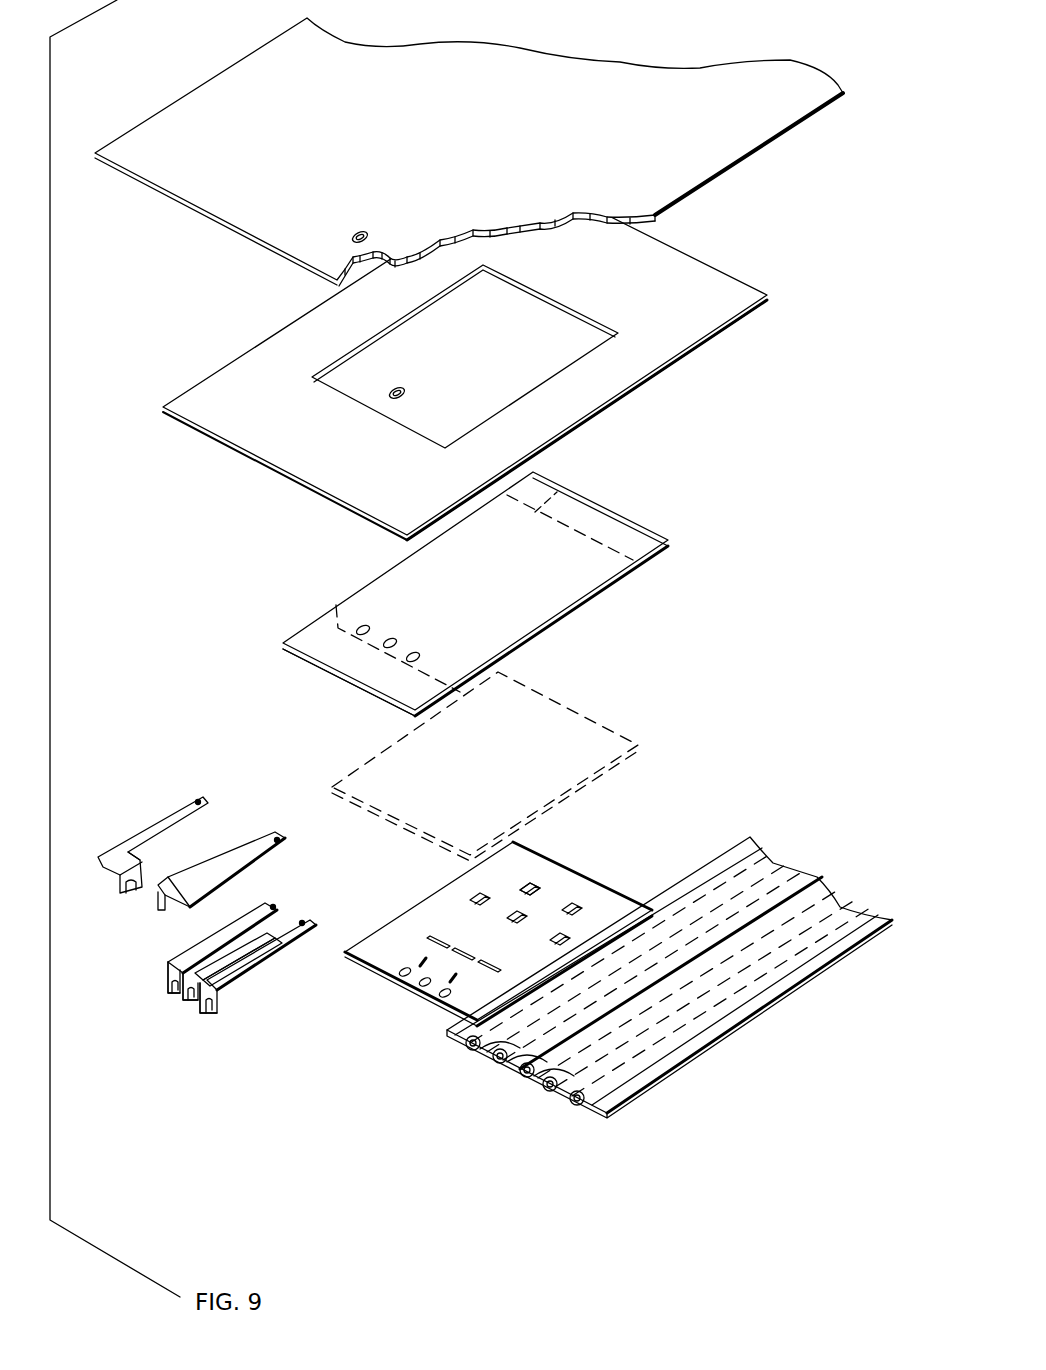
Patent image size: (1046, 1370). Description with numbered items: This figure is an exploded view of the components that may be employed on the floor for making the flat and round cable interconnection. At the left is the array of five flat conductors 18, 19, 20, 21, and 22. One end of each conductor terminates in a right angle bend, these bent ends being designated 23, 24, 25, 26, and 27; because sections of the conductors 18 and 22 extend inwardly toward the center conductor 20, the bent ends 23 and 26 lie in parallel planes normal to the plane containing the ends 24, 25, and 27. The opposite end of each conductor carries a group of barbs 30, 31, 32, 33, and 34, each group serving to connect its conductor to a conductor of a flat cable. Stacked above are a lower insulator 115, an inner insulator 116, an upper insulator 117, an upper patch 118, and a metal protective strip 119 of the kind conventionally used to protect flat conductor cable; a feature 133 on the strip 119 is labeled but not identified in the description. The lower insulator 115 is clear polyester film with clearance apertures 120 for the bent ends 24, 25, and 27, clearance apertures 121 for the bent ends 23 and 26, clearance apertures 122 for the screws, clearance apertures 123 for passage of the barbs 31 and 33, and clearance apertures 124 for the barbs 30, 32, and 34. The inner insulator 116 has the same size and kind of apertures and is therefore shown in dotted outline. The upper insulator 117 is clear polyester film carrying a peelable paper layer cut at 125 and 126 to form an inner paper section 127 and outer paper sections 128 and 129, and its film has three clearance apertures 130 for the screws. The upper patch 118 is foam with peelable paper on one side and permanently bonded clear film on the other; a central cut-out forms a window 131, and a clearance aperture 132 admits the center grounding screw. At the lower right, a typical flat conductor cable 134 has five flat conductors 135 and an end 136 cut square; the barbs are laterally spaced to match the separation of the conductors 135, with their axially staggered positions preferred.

The flat conductor 18 is at (166, 844).
The flat conductor 19 is at (201, 967).
The center conductor 20 is at (237, 947).
The flat conductor 21 is at (247, 950).
The flat conductor 22 is at (215, 869).
The bent end 23 is at (130, 882).
The bent end 24 is at (170, 976).
The bent end 25 is at (190, 990).
The bent end 26 is at (162, 898).
The bent end 27 is at (220, 1003).
The group of barbs 30 is at (200, 798).
The group of barbs 31 is at (273, 906).
The group of barbs 32 is at (302, 922).
The group of barbs 33 is at (290, 934).
The group of barbs 34 is at (276, 839).
The lower insulator 115 is at (513, 915).
The inner insulator 116 is at (610, 726).
The upper insulator 117 is at (485, 593).
The upper patch 118 is at (475, 356).
The metal protective strip 119 is at (469, 152).
The clearance apertures 120 is at (403, 943).
The clearance apertures 121 is at (400, 960).
The clearance apertures 122 is at (430, 993).
The clearance apertures 123 is at (528, 895).
The clearance apertures 124 is at (572, 912).
The paper cut 125 is at (336, 607).
The paper cut 126 is at (557, 492).
The inner paper section 127 is at (550, 624).
The outer paper section 128 is at (333, 677).
The outer paper section 129 is at (643, 523).
The clearance apertures 130 is at (393, 640).
The window 131 is at (547, 370).
The clearance aperture 132 is at (404, 393).
The hole 133 is at (362, 232).
The flat conductor cable 134 is at (667, 992).
The flat conductors 135 is at (548, 1077).
The cable end 136 is at (550, 1080).